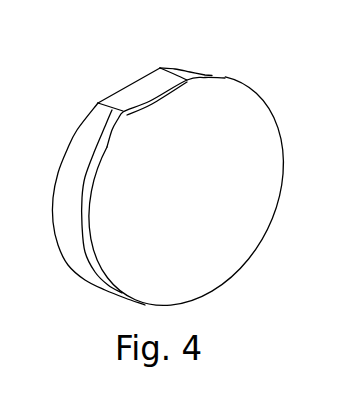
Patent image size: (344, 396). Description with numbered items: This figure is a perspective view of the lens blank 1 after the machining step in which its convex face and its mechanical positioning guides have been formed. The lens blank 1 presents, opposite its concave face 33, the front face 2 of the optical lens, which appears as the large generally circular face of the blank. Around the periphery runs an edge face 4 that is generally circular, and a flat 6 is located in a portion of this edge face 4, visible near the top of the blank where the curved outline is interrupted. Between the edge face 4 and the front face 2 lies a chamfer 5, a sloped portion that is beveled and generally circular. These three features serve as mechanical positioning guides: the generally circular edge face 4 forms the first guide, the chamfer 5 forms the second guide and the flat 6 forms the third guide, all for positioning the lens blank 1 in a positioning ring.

The lens blank 1 is at (214, 60).
The front face 2 is at (262, 117).
The edge face 4 is at (67, 193).
The chamfer 5 is at (83, 227).
The flat 6 is at (136, 95).
The concave face 33 is at (81, 126).